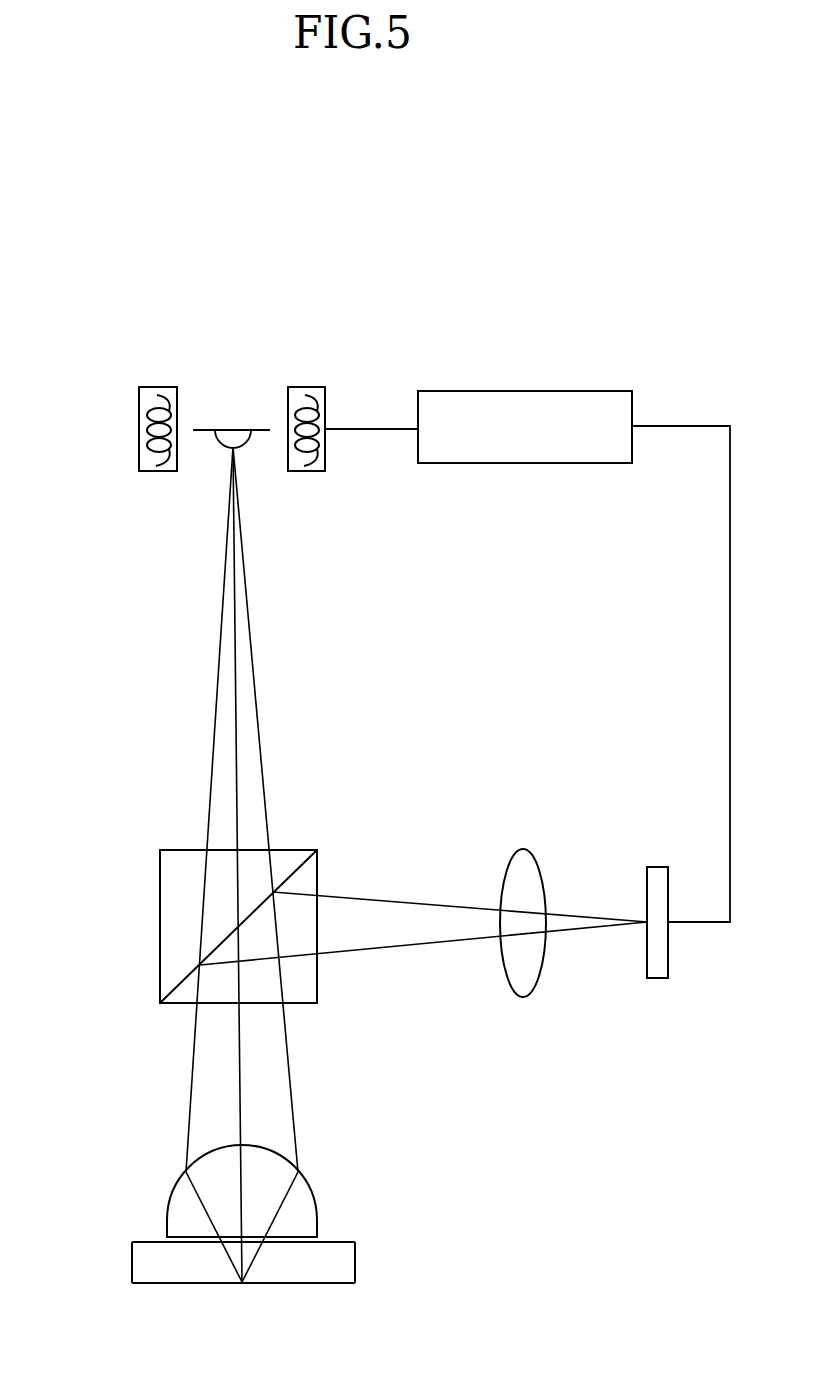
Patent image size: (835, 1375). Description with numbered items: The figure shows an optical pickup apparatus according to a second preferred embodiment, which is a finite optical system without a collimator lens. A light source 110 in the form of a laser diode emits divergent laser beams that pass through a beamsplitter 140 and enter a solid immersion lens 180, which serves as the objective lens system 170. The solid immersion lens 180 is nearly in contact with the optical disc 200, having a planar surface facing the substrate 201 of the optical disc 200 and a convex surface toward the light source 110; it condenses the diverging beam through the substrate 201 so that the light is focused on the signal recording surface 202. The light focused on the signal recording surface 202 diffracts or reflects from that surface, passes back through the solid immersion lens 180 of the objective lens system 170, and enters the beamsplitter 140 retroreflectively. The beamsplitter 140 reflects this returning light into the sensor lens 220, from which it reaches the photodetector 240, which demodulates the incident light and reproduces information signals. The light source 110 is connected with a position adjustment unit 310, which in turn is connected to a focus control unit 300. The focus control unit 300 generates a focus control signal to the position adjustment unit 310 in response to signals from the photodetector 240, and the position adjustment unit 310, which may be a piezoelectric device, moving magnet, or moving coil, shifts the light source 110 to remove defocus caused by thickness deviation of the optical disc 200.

The light source 110 is at (238, 428).
The position adjustment unit 310 is at (312, 386).
The focus control unit 300 is at (465, 390).
The beamsplitter 140 is at (305, 850).
The sensor lens 220 is at (537, 858).
The photodetector 240 is at (657, 866).
The objective lens system 170 is at (292, 1177).
The solid immersion lens 180 is at (300, 1182).
The optical disc 200 is at (245, 1293).
The substrate 201 is at (132, 1262).
The signal recording surface 202 is at (155, 1284).